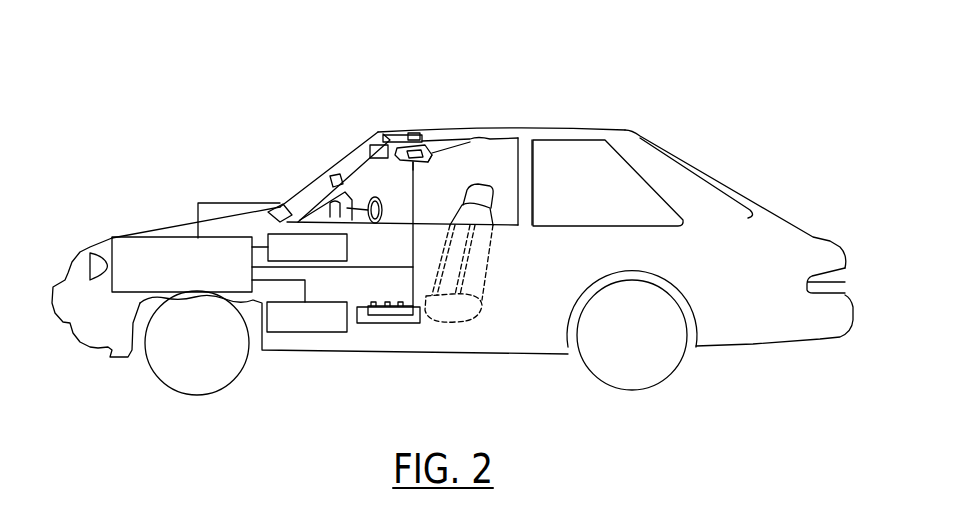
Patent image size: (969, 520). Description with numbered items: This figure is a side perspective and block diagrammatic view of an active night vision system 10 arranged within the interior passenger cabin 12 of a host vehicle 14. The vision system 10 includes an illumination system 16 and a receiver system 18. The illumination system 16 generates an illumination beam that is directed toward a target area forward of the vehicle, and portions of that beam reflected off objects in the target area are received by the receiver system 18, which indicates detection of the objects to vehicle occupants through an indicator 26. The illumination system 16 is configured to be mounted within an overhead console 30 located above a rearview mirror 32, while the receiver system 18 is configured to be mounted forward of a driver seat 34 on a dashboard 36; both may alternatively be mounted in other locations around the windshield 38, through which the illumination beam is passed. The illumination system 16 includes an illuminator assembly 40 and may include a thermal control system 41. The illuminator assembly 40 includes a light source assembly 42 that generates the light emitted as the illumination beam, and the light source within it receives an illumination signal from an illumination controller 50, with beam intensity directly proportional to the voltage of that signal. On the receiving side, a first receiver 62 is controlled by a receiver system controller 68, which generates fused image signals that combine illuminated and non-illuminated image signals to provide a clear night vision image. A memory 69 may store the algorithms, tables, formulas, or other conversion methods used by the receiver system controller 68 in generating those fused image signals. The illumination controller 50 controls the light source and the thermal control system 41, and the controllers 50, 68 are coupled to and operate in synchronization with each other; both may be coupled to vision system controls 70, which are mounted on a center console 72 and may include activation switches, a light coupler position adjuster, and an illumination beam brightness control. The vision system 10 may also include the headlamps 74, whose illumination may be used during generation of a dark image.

The active night vision system 10 is at (347, 99).
The interior passenger cabin 12 is at (487, 347).
The host vehicle 14 is at (572, 128).
The illumination system 16 is at (471, 152).
The receiver system 18 is at (226, 198).
The indicator 26 is at (348, 247).
The overhead console 30 is at (493, 138).
The rearview mirror 32 is at (350, 177).
The driver seat 34 is at (493, 213).
The dashboard 36 is at (327, 178).
The windshield 38 is at (315, 185).
The illuminator assembly 40 is at (423, 132).
The thermal control system 41 is at (422, 171).
The light source assembly 42 is at (372, 138).
The illumination controller 50 is at (437, 156).
The first receiver 62 is at (300, 212).
The receiver system controller 68 is at (173, 235).
The memory 69 is at (327, 302).
The vision system controls 70 is at (390, 317).
The center console 72 is at (368, 325).
The headlamps 74 is at (109, 245).